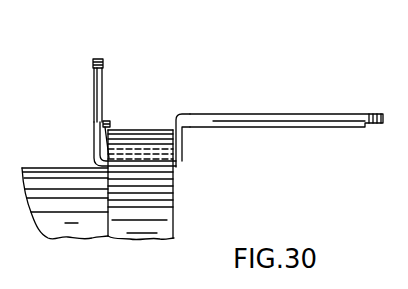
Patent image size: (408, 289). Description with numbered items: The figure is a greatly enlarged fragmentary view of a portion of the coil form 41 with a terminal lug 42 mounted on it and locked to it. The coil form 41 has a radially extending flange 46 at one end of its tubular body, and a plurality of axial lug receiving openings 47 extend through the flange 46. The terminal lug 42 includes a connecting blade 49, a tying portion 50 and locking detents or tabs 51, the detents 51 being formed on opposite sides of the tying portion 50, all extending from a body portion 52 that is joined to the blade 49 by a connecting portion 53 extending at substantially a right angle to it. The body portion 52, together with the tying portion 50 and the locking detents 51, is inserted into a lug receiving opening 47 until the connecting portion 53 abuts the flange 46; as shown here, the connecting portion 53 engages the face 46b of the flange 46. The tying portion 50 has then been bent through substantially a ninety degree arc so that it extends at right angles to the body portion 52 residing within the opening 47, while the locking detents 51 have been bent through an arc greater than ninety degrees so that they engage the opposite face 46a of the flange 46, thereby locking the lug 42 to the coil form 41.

The coil form 41 is at (64, 221).
The terminal lug 42 is at (256, 112).
The flange 46 is at (138, 131).
The face of the flange 46a is at (100, 155).
The face of the flange 46b is at (183, 156).
The lug receiving opening 47 is at (149, 160).
The connecting blade 49 is at (326, 118).
The tying portion 50 is at (102, 70).
The locking detent 51 is at (108, 122).
The body portion 52 is at (176, 170).
The connecting portion 53 is at (183, 139).